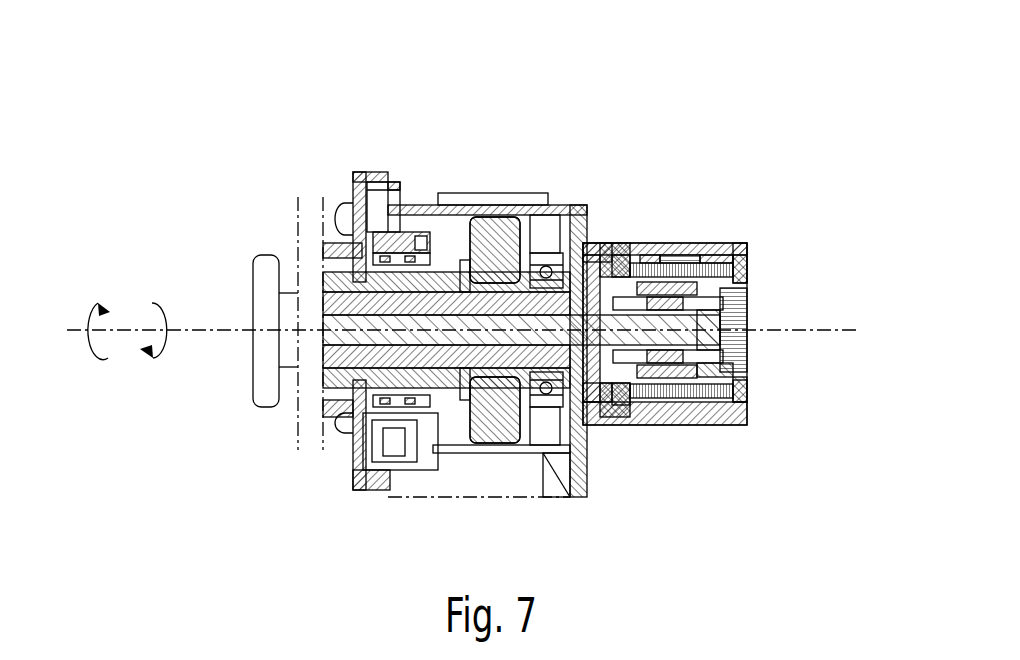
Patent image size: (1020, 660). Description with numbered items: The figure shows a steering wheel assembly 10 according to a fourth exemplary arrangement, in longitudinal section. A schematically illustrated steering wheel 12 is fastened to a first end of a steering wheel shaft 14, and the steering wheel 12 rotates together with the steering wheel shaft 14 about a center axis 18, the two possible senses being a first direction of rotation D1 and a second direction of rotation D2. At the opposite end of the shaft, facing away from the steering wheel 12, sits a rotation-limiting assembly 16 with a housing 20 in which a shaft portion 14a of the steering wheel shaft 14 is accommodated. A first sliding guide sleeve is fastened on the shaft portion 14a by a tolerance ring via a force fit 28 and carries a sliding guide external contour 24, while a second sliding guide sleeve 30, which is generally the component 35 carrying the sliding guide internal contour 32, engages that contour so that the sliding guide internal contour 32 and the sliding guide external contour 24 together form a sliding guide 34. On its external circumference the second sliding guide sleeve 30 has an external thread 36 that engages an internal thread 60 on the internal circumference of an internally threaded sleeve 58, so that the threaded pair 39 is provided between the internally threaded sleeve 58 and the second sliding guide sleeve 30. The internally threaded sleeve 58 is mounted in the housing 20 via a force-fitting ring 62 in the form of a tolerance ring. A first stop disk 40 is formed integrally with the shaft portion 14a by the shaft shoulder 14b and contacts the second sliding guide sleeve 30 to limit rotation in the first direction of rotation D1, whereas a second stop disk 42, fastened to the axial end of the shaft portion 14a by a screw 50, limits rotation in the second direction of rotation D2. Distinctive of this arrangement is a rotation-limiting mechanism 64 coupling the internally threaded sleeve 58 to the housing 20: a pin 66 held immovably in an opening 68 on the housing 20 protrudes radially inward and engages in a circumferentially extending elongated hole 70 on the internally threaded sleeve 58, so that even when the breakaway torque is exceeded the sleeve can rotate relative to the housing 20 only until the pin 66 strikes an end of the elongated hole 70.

The steering wheel assembly 10 is at (769, 115).
The steering wheel 12 is at (267, 258).
The steering wheel shaft 14 is at (288, 300).
The shaft portion 14a is at (748, 360).
The shaft shoulder 14b is at (578, 240).
The rotation-limiting assembly 16 is at (807, 132).
The center axis 18 is at (217, 332).
The housing 20 is at (746, 258).
The sliding guide external contour 24 is at (703, 355).
The force fit 28 is at (612, 368).
The second sliding guide sleeve 30 is at (640, 357).
The sliding guide internal contour 32 is at (748, 312).
The sliding guide 34 is at (683, 355).
The component carrying the sliding guide internal contour 35 is at (495, 330).
The external thread 36 is at (672, 243).
The threaded pair 39 is at (690, 243).
The first stop disk 40 is at (560, 432).
The second stop disk 42 is at (748, 364).
The screw 50 is at (748, 338).
The internally threaded sleeve 58 is at (748, 262).
The internal thread 60 is at (748, 290).
The force-fitting ring 62 is at (731, 243).
The rotation-limiting mechanism 64 is at (628, 220).
The pin 66 is at (628, 243).
The opening 68 is at (590, 245).
The elongated hole 70 is at (654, 243).
The first direction of rotation D1 is at (152, 303).
The second direction of rotation D2 is at (98, 303).